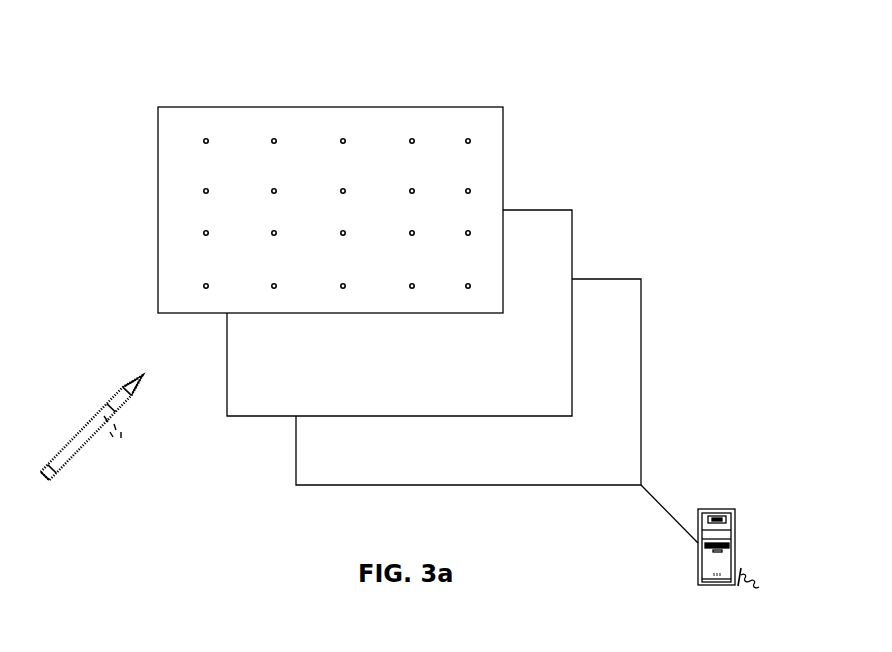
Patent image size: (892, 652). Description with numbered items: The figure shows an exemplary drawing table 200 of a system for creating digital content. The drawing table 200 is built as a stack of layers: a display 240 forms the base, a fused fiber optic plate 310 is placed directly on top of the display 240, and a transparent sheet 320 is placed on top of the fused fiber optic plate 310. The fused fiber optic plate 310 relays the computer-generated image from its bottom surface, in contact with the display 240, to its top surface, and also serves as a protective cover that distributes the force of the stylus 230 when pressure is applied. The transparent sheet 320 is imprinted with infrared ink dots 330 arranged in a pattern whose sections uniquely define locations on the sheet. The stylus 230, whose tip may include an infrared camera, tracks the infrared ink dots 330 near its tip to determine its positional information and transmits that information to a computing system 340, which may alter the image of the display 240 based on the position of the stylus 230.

The drawing table 200 is at (458, 80).
The stylus 230 is at (73, 468).
The display 240 is at (641, 365).
The fused fiber optic plate 310 is at (572, 243).
The transparent sheet 320 is at (503, 158).
The infrared ink dots 330 is at (209, 141).
The computing system 340 is at (708, 506).